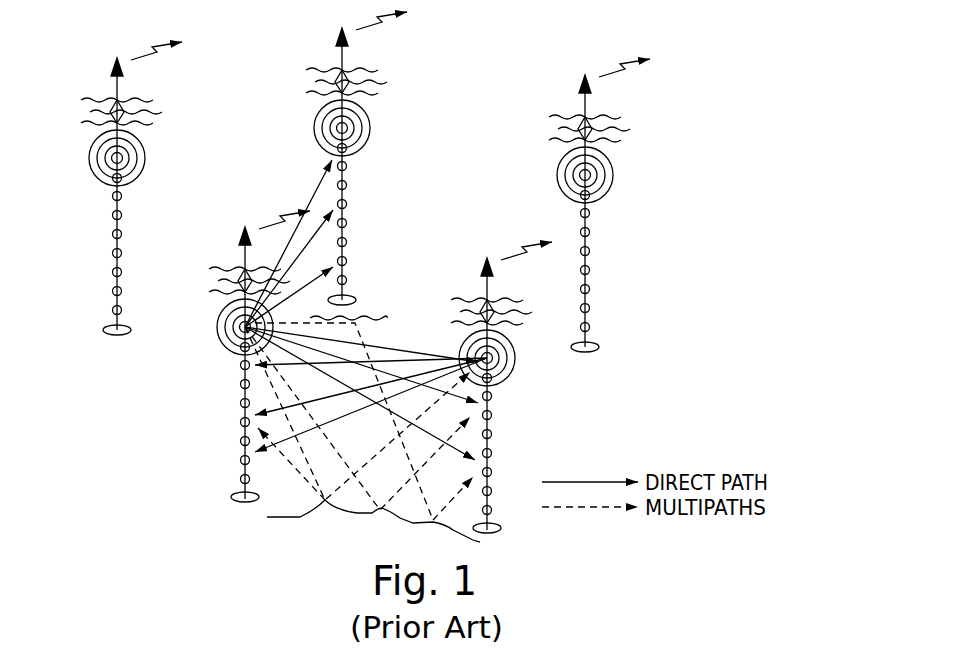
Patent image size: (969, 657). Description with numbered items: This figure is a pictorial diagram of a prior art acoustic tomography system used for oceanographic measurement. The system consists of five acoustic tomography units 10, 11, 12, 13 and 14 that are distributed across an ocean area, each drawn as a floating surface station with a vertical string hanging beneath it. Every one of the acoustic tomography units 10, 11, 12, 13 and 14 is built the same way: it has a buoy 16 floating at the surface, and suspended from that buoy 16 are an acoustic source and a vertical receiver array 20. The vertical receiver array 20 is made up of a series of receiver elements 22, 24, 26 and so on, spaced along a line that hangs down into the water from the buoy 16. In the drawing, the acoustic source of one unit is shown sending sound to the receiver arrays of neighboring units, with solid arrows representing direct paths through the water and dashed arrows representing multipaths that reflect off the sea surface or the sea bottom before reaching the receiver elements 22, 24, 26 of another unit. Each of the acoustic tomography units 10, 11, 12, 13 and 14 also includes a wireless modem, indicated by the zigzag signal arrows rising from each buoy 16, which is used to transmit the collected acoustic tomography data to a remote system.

The acoustic tomography unit 10 is at (100, 242).
The acoustic tomography unit 11 is at (360, 222).
The acoustic tomography unit 12 is at (595, 211).
The acoustic tomography unit 13 is at (241, 356).
The acoustic tomography unit 14 is at (504, 387).
The buoy 16 is at (560, 98).
The vertical receiver array 20 is at (630, 233).
The receiver element 22 is at (605, 285).
The receiver element 24 is at (610, 317).
The receiver element 26 is at (607, 345).